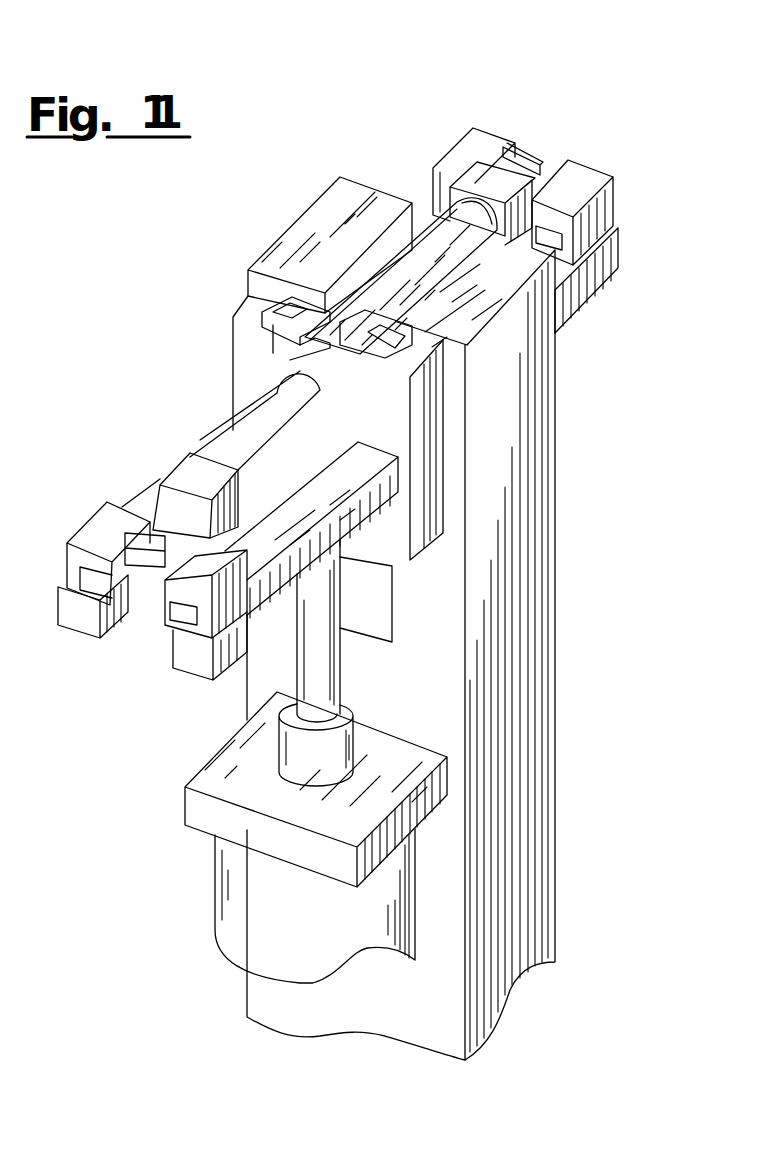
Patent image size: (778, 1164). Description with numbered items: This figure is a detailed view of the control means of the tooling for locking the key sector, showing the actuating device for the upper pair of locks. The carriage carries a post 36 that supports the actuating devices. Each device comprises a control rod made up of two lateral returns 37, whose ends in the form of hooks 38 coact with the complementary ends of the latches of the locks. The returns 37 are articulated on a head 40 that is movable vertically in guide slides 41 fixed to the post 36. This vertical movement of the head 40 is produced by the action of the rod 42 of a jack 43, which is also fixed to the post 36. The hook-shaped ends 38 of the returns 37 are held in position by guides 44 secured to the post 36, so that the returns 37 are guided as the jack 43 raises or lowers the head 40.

The post 36 is at (555, 625).
The lateral returns 37 is at (430, 250).
The hook-shaped ends 38 is at (535, 165).
The head 40 is at (283, 352).
The guide slides 41 is at (433, 420).
The rod 42 is at (313, 682).
The jack 43 is at (217, 812).
The guides 44 is at (620, 188).